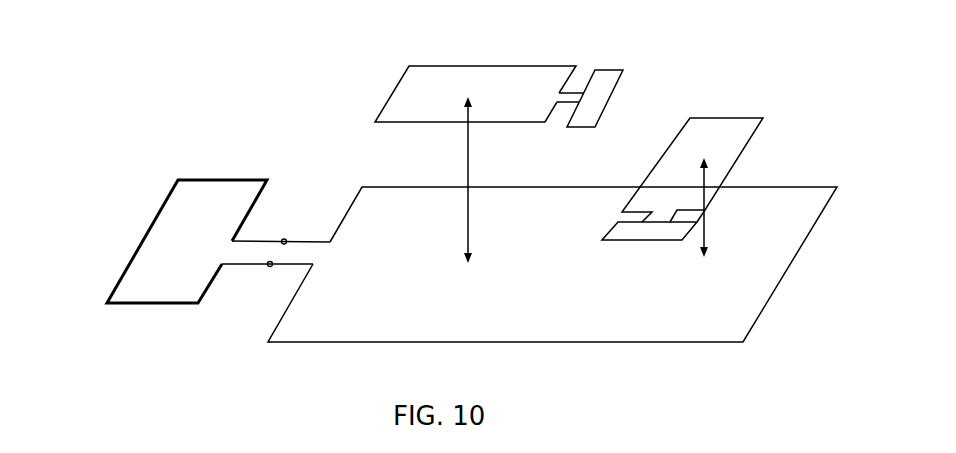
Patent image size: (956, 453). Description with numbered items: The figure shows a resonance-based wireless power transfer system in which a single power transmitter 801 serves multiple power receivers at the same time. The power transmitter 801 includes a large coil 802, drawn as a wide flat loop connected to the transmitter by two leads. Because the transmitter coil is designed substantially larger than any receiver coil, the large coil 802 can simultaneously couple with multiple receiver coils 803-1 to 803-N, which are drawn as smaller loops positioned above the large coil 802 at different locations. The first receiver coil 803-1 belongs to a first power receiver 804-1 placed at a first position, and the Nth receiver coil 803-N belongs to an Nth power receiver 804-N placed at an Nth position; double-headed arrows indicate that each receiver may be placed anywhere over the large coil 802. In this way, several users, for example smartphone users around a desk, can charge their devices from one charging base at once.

The power transmitter 801 is at (181, 239).
The large coil 802 is at (363, 336).
The receiver coil 803-1 is at (396, 76).
The receiver coil 803-N is at (748, 137).
The power receiver 804-1 is at (513, 153).
The power receiver 804-N is at (725, 209).